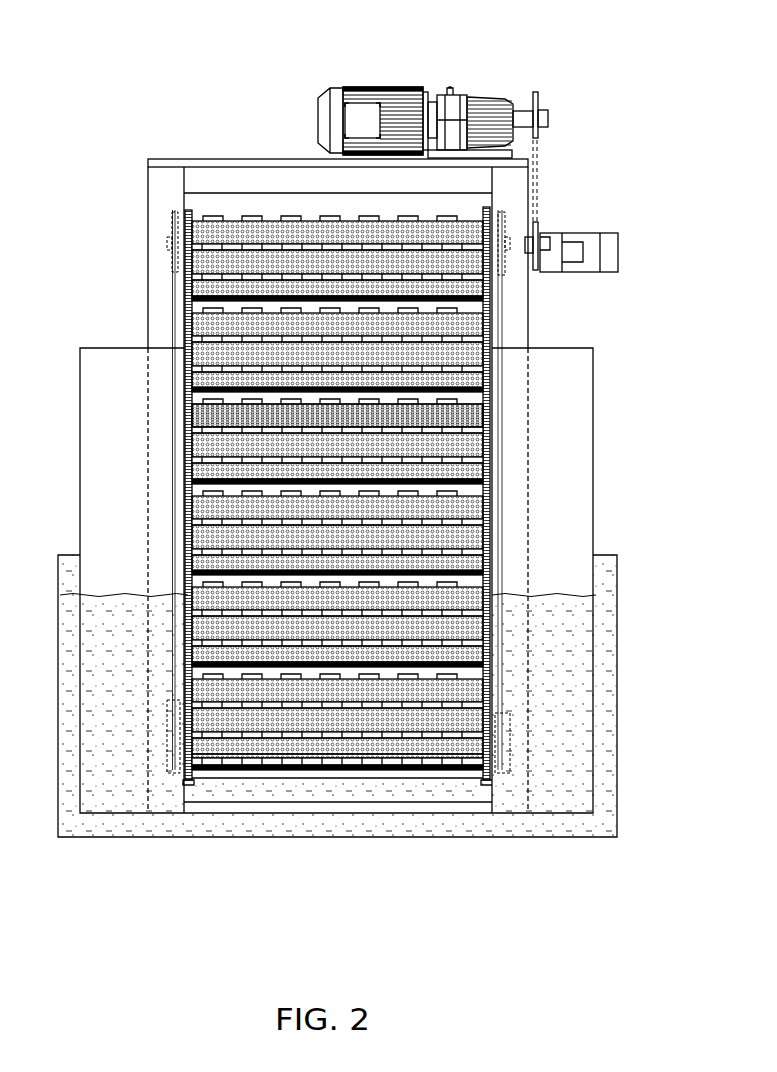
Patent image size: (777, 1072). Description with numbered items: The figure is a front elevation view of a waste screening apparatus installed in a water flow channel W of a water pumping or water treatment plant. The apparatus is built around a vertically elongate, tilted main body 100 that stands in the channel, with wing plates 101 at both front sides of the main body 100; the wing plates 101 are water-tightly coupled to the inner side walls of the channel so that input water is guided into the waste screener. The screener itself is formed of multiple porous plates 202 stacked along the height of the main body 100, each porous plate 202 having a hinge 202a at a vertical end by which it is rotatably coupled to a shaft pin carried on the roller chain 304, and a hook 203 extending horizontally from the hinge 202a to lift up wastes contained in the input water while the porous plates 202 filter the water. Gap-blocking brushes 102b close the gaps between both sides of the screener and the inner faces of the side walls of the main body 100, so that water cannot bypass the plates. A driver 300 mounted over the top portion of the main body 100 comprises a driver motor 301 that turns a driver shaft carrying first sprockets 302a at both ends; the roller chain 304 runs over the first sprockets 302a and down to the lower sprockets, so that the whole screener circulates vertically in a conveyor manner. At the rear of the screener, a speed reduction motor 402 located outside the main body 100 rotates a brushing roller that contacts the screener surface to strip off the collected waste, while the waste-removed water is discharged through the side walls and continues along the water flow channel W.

The main body 100 is at (146, 153).
The wing plates 101 is at (97, 528).
The gap-blocking brushes 102b is at (186, 413).
The porous plates 202 is at (493, 415).
The hinge 202a is at (493, 431).
The hooks 203 is at (185, 206).
The driver 300 is at (417, 86).
The driver motor 301 is at (317, 88).
The first sprockets 302a is at (165, 242).
The roller chain 304 is at (175, 322).
The speed reduction motor 402 is at (590, 232).
The water flow channel W is at (563, 838).